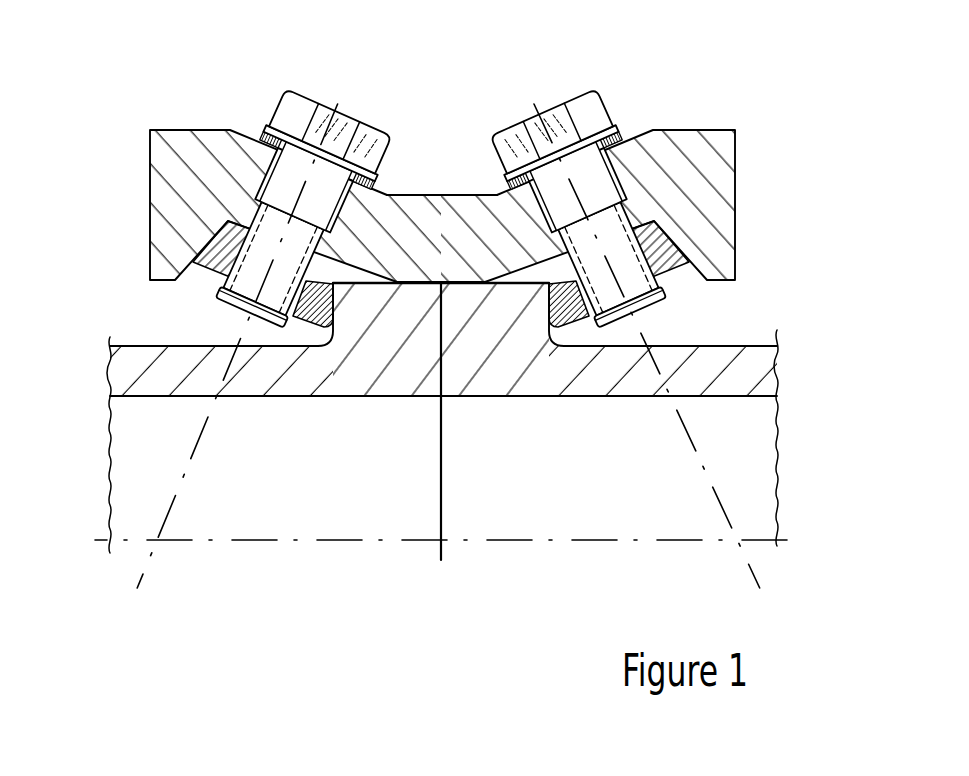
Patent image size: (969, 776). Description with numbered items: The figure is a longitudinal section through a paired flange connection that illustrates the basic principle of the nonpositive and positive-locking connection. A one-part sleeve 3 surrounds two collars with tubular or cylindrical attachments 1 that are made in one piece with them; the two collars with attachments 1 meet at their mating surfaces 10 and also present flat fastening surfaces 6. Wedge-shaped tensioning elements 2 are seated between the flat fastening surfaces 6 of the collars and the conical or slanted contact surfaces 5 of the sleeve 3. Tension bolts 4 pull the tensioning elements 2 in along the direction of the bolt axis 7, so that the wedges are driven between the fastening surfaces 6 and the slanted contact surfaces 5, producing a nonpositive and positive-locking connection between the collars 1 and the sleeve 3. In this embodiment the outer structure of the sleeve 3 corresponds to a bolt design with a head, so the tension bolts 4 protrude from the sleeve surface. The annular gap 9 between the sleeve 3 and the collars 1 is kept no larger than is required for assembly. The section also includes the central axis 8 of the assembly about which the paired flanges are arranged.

The collar with tubular or cylindrical attachment 1 is at (327, 353).
The wedge-shaped tensioning element 2 is at (212, 262).
The one-part sleeve 3 is at (703, 165).
The tension bolt 4 is at (292, 113).
The conical or slanted contact surface 5 is at (228, 224).
The fastening surface 6 is at (487, 230).
The bolt axis 7 is at (185, 477).
The center axis 8 is at (425, 541).
The annular gap 9 is at (410, 285).
The mating surface 10 is at (447, 350).